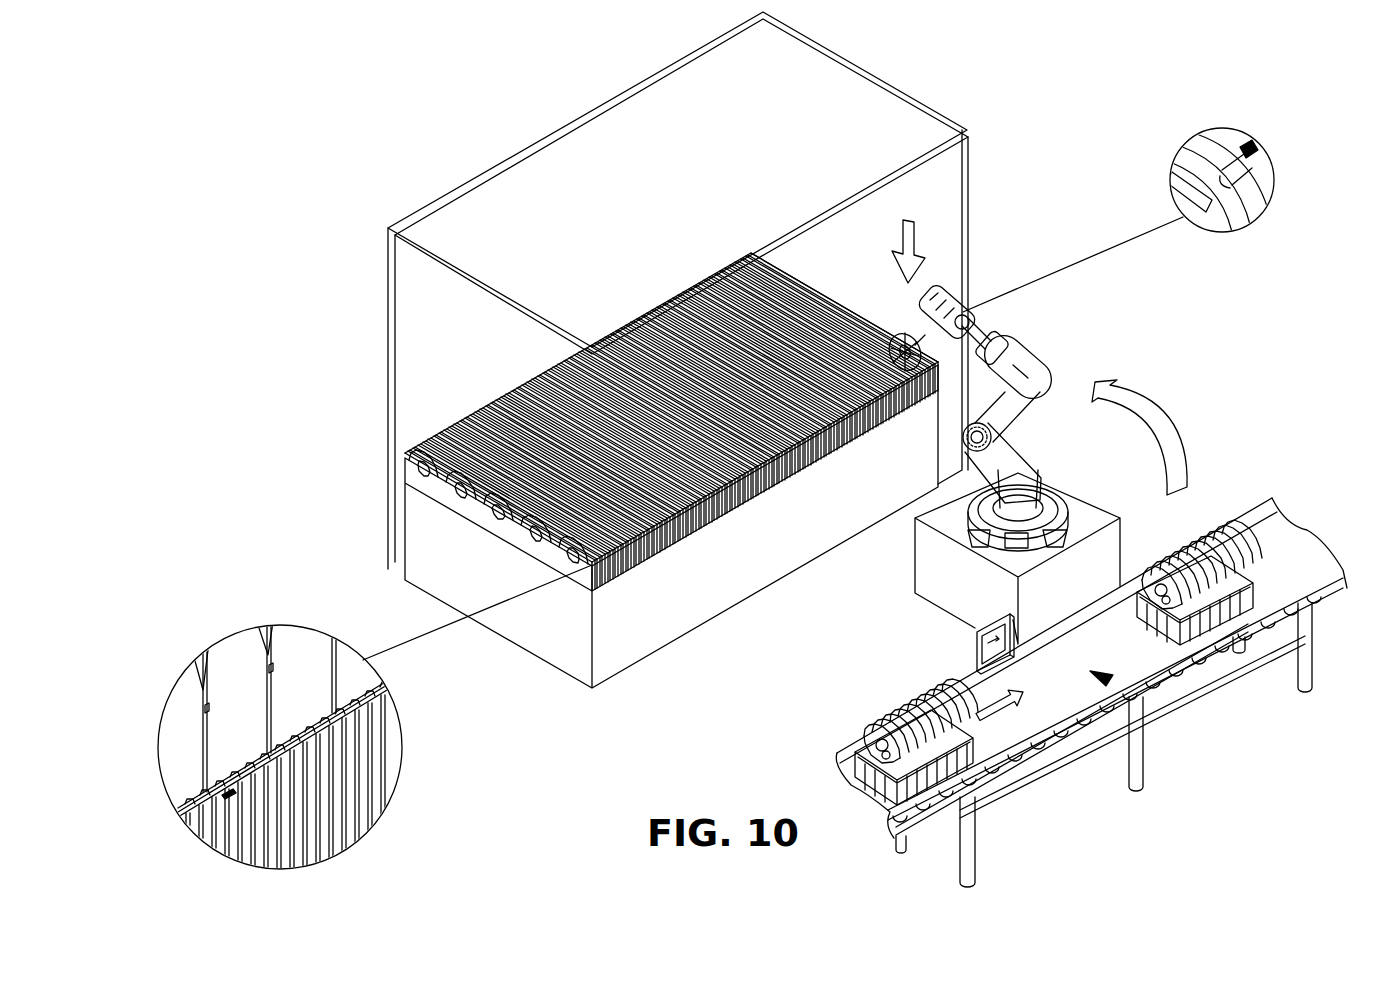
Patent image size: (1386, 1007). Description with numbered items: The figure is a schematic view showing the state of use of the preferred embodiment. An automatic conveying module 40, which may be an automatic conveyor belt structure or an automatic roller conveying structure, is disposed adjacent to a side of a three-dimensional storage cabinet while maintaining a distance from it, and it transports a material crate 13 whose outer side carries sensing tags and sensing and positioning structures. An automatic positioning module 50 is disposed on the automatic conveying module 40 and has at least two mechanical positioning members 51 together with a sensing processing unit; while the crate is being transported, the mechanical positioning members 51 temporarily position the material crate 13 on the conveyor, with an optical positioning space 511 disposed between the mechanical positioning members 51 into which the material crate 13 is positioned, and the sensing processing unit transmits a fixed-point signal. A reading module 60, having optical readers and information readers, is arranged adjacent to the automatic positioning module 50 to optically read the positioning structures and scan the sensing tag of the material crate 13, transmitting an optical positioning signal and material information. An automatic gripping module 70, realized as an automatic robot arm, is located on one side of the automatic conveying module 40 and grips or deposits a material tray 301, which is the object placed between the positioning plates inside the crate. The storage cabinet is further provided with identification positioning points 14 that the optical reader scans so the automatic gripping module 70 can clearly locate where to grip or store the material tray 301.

The material crate 13 is at (1238, 606).
The identification positioning point 14 is at (236, 792).
The automatic conveying module 40 is at (1260, 506).
The automatic positioning module 50 is at (1100, 729).
The mechanical positioning member 51 is at (1104, 728).
The optical positioning space 511 is at (998, 842).
The reading module 60 is at (1245, 152).
The automatic gripping module 70 is at (1040, 338).
The material tray 301 is at (882, 413).